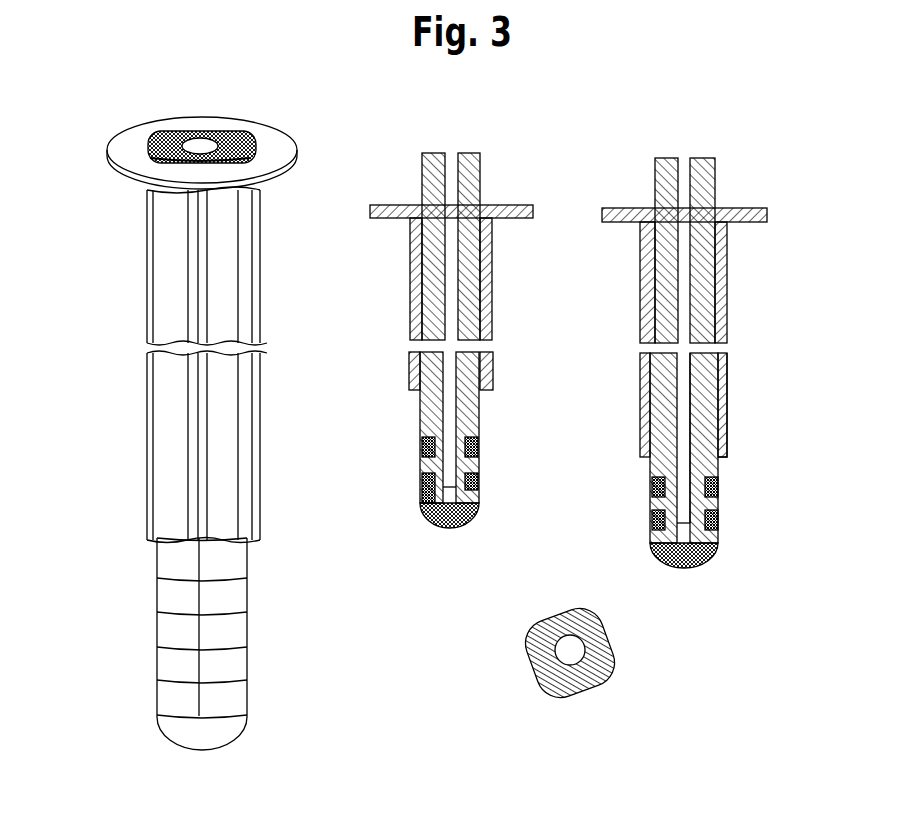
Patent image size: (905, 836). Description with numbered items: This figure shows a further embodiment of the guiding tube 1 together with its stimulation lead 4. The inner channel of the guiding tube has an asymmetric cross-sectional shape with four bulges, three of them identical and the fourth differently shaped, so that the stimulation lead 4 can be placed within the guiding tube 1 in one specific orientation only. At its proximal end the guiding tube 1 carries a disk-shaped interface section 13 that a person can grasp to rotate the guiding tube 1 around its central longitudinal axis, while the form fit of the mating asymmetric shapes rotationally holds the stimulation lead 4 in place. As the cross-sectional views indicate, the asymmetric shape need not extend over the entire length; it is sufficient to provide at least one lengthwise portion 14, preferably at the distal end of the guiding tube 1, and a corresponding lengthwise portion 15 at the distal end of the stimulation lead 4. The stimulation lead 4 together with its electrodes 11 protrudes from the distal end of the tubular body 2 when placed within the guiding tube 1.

The guiding tube 1 is at (133, 333).
The tubular body 2 is at (236, 287).
The stimulation lead 4 is at (176, 554).
The electrodes 11 is at (232, 595).
The disk-shaped interface section 13 is at (277, 145).
The lengthwise portion 14 is at (728, 418).
The lengthwise portion 15 is at (706, 468).